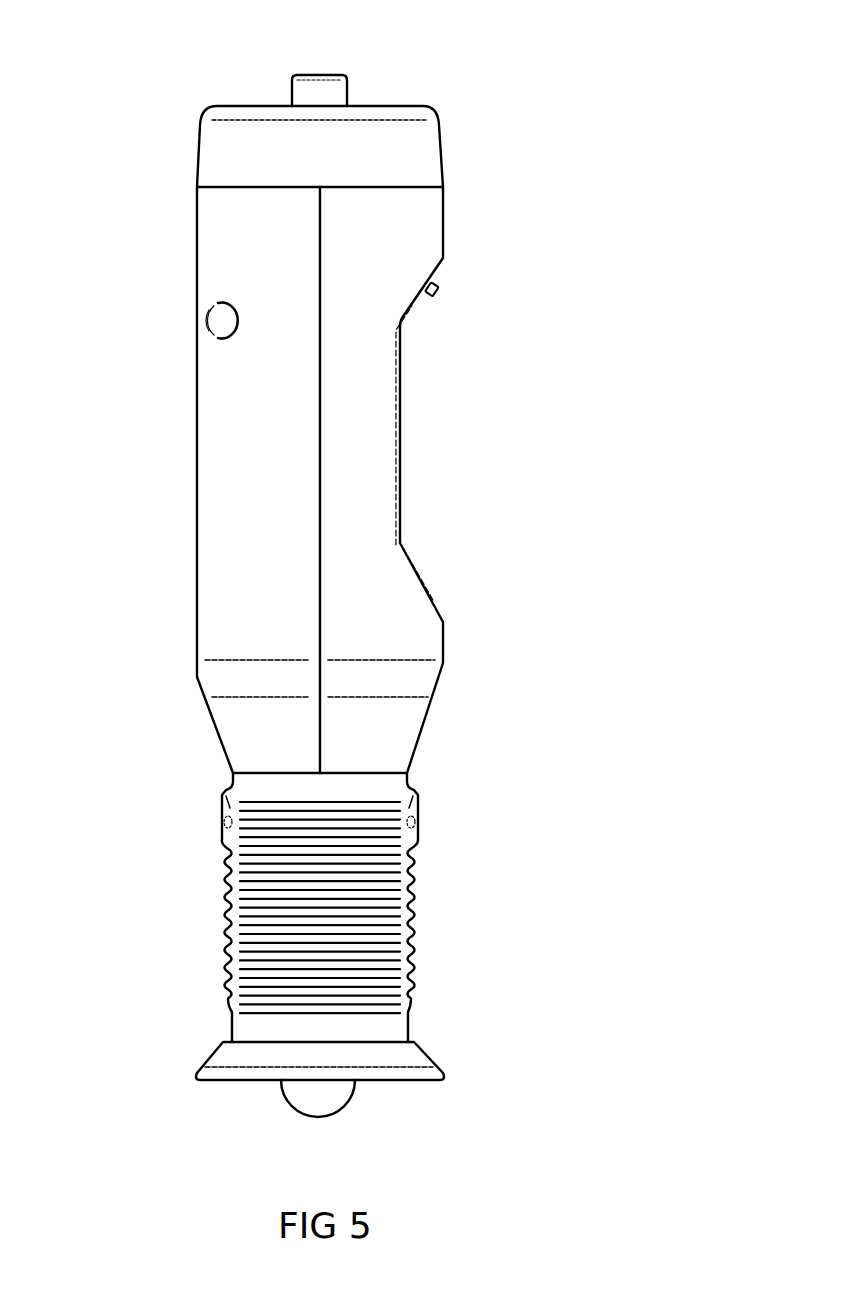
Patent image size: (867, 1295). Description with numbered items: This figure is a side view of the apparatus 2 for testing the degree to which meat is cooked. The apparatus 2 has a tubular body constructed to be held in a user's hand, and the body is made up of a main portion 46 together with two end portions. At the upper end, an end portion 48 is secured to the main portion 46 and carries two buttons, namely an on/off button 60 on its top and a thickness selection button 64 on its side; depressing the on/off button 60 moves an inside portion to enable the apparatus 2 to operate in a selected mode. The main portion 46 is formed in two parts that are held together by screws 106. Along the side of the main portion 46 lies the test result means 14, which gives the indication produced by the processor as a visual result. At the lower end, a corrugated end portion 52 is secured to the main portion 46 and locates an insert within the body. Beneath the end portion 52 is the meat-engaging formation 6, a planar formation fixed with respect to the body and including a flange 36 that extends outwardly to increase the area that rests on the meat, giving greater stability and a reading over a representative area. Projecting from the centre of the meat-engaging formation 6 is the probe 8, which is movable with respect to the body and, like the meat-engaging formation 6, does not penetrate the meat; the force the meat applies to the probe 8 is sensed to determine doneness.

The apparatus 2 is at (545, 73).
The meat-engaging formation 6 is at (363, 972).
The probe 8 is at (290, 1108).
The test result means 14 is at (407, 458).
The flange 36 is at (420, 1053).
The main portion 46 is at (217, 482).
The end portion 48 is at (413, 160).
The end portion 52 is at (413, 902).
The on/off button 60 is at (325, 93).
The thickness selection button 64 is at (437, 293).
The screws 106 is at (217, 318).